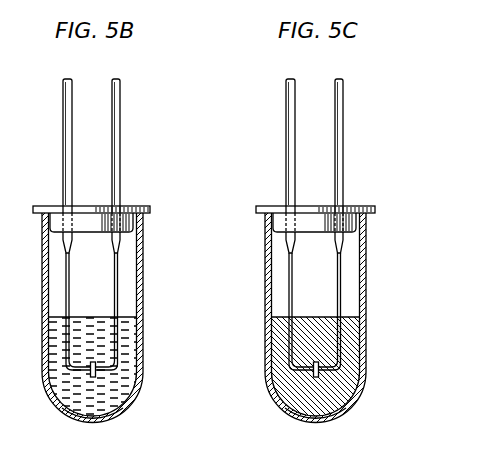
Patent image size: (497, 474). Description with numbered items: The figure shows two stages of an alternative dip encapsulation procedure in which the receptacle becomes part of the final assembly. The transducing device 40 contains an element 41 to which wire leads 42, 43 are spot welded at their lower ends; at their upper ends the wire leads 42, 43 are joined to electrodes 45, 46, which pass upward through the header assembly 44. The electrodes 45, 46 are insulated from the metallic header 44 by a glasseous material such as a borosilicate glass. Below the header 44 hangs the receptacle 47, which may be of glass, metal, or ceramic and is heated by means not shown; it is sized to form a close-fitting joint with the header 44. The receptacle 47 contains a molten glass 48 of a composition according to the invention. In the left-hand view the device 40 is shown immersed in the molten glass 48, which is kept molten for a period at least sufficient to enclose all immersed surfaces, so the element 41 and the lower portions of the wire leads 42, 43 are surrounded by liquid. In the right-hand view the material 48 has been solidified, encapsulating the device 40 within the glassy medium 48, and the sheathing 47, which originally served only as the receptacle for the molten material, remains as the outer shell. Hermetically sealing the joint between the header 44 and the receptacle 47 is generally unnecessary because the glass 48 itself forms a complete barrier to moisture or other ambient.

In FIG. 5B, the device 40 is at (149, 206).
In FIG. 5C, the device 40 is at (329, 194).
In FIG. 5B, the element 41 is at (89, 378).
In FIG. 5C, the element 41 is at (309, 319).
In FIG. 5B, the wire lead 42 is at (66, 272).
In FIG. 5C, the wire lead 42 is at (274, 311).
In FIG. 5B, the wire lead 43 is at (118, 273).
In FIG. 5C, the wire lead 43 is at (359, 311).
In FIG. 5B, the header assembly 44 is at (133, 225).
In FIG. 5C, the header assembly 44 is at (336, 226).
In FIG. 5B, the electrode 45 is at (63, 128).
In FIG. 5C, the electrode 45 is at (275, 166).
In FIG. 5B, the electrode 46 is at (119, 128).
In FIG. 5C, the electrode 46 is at (361, 166).
In FIG. 5B, the receptacle 47 is at (104, 422).
In FIG. 5C, the receptacle 47 is at (326, 427).
In FIG. 5B, the molten glass 48 is at (120, 388).
In FIG. 5C, the molten glass 48 is at (334, 370).